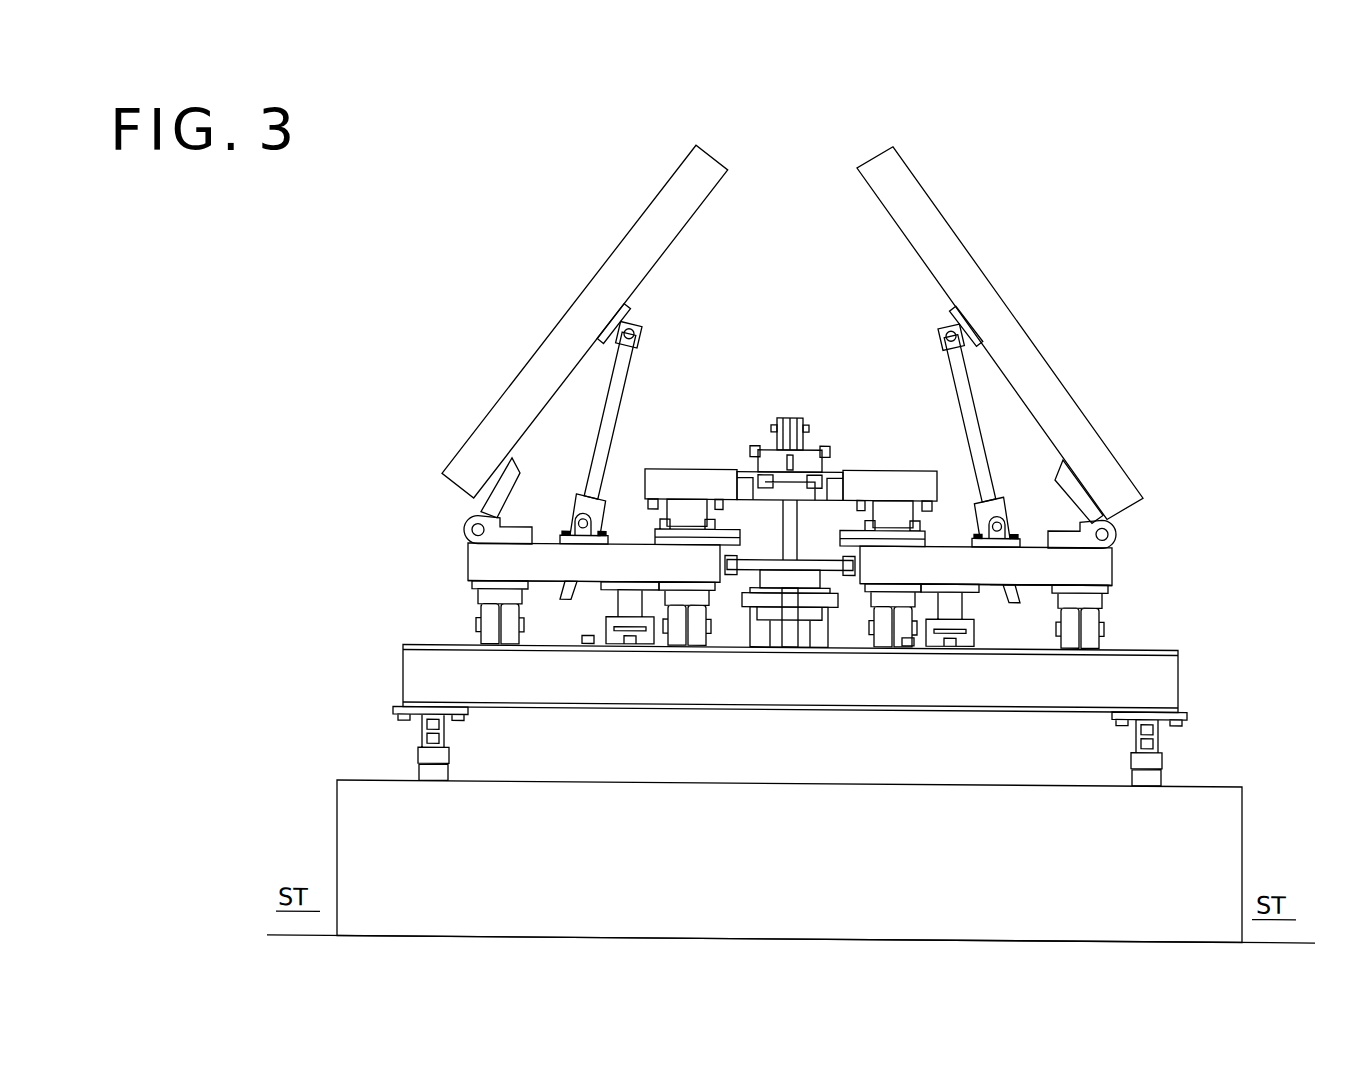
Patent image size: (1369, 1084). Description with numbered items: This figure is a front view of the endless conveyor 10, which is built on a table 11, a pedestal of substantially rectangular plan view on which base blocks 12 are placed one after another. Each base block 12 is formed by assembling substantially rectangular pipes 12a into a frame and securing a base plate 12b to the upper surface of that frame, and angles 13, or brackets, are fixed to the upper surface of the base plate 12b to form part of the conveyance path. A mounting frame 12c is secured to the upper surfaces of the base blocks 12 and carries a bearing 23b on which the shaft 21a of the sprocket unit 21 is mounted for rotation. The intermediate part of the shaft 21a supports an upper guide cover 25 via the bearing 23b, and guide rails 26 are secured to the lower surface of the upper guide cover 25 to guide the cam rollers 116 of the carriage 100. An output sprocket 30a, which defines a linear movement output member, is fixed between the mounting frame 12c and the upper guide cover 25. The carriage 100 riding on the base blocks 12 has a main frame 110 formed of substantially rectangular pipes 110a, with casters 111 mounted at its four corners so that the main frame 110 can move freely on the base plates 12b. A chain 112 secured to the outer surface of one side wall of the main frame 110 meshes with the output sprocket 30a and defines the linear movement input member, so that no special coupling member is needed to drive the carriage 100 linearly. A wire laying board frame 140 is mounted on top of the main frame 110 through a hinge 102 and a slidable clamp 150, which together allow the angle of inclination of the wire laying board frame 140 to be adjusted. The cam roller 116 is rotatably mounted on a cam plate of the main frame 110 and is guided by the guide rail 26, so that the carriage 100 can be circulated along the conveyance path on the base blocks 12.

The endless conveyor 10 is at (1100, 208).
The table 11 is at (1212, 790).
The base block 12 is at (403, 680).
The rectangular pipe 12a is at (1165, 686).
The base plate 12b is at (1150, 648).
The mounting frame 12c is at (815, 640).
The angle 13 is at (638, 648).
The sprocket unit 21 is at (835, 417).
The shaft 21a is at (785, 648).
The bearing 23b is at (756, 497).
The upper guide cover 25 is at (723, 482).
The guide rail 26 is at (673, 500).
The output sprocket 30a is at (748, 620).
The carriage 100 is at (422, 572).
The hinge 102 is at (463, 532).
The main frame 110 is at (1122, 572).
The rectangular pipe 110a is at (1035, 575).
The caster 111 is at (490, 630).
The chain 112 is at (848, 584).
The cam roller 116 is at (686, 505).
The wire laying board frame 140 is at (1115, 519).
The slidable clamp 150 is at (1005, 498).